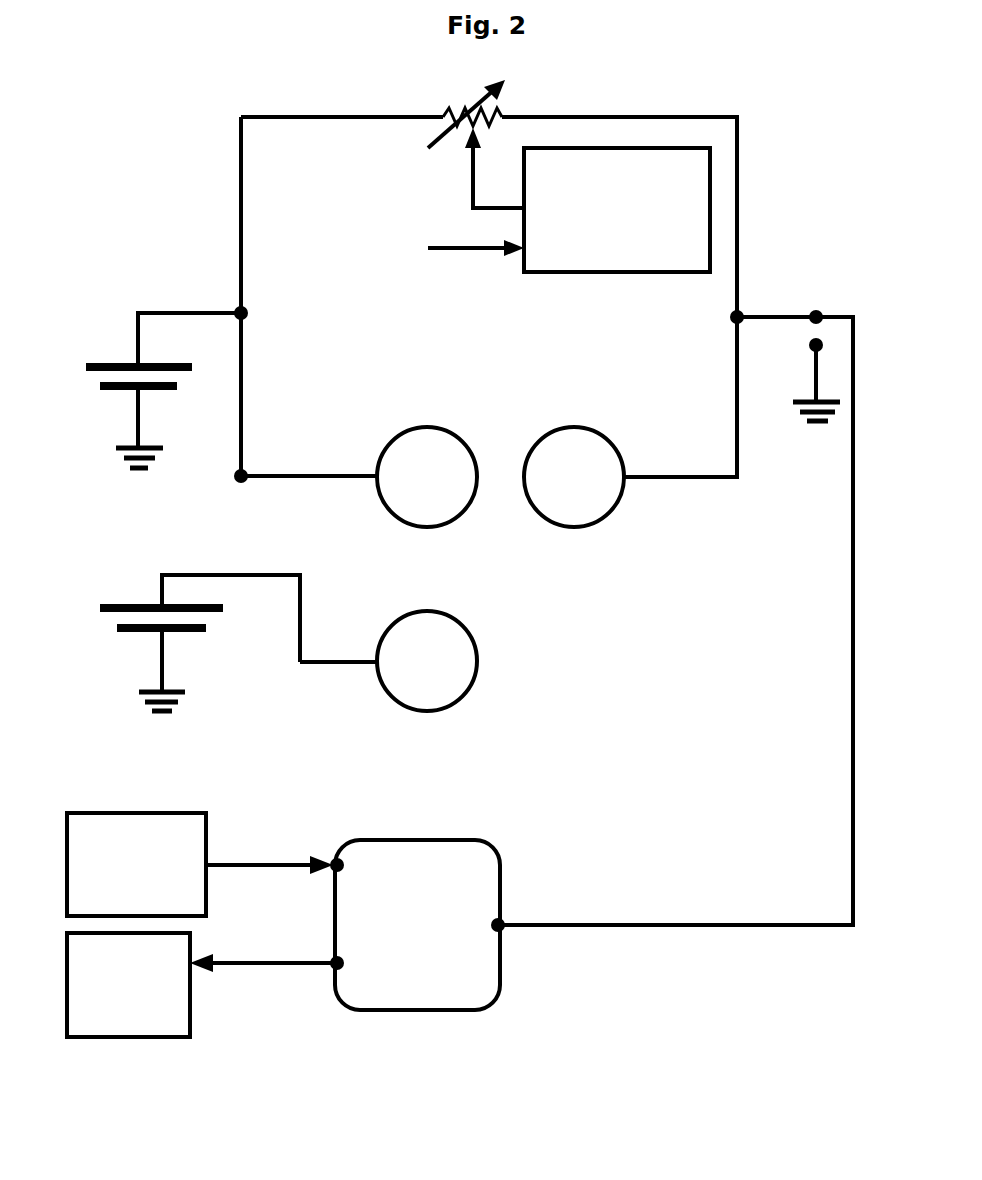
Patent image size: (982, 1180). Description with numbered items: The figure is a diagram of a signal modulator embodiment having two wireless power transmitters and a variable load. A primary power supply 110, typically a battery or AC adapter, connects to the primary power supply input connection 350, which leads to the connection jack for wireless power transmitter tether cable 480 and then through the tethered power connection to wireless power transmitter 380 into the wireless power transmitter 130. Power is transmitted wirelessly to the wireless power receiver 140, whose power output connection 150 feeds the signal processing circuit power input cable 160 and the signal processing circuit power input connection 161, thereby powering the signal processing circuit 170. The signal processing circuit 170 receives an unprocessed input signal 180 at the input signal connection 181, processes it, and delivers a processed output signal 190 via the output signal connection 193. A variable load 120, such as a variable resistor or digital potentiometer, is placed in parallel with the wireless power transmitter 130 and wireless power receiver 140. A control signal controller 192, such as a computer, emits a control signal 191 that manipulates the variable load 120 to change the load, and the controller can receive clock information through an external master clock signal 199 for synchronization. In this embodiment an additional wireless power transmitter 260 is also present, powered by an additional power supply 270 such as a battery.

The primary power supply 110 is at (86, 367).
The variable load 120 is at (472, 97).
The wireless power transmitter 130 is at (410, 426).
The wireless power receiver 140 is at (557, 426).
The power output connection 150 is at (810, 315).
The signal processing circuit power input cable 160 is at (833, 315).
The signal processing circuit power input connection 161 is at (505, 923).
The signal processing circuit 170 is at (418, 840).
The unprocessed input signal 180 is at (210, 862).
The input signal connection 181 is at (341, 862).
The processed output signal 190 is at (193, 985).
The control signal 191 is at (470, 183).
The control signal controller 192 is at (617, 273).
The output signal connection 193 is at (340, 965).
The external master clock signal 199 is at (477, 250).
The additional wireless power transmitter 260 is at (477, 662).
The additional power supply 270 is at (100, 608).
The primary power supply input connection 350 is at (238, 307).
The tethered power connection to wireless power transmitter 380 is at (295, 478).
The connection jack for wireless power transmitter tether cable 480 is at (240, 481).